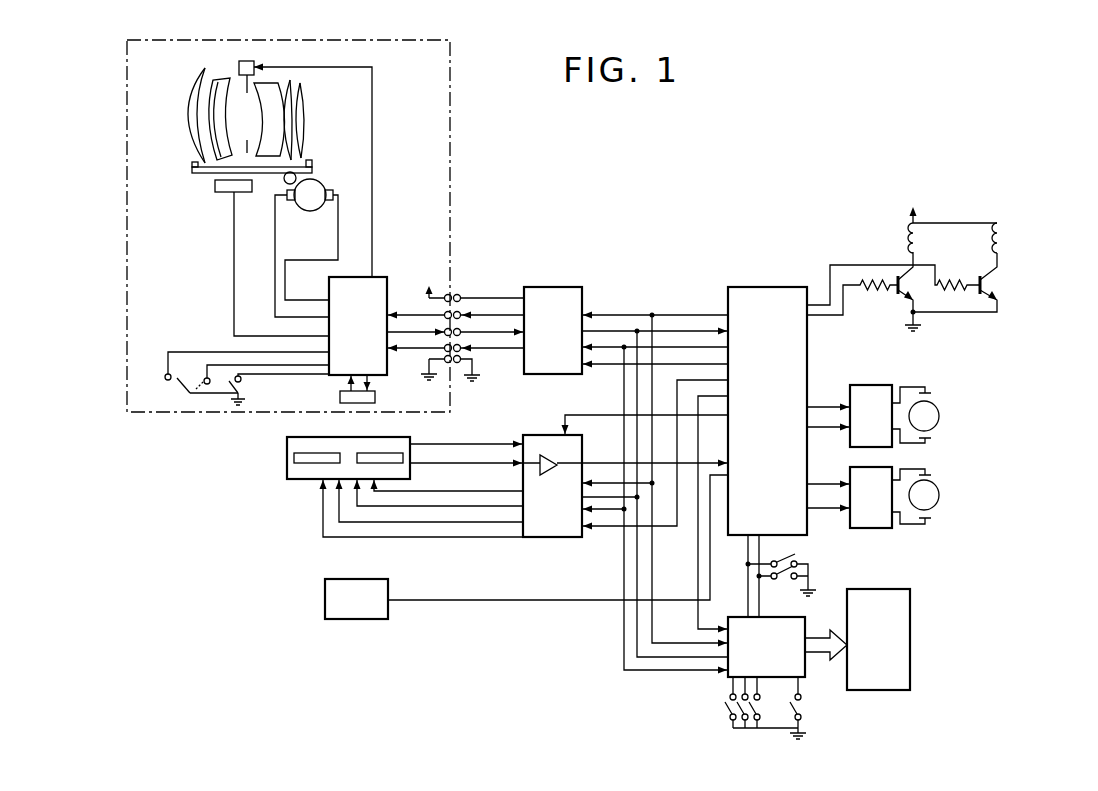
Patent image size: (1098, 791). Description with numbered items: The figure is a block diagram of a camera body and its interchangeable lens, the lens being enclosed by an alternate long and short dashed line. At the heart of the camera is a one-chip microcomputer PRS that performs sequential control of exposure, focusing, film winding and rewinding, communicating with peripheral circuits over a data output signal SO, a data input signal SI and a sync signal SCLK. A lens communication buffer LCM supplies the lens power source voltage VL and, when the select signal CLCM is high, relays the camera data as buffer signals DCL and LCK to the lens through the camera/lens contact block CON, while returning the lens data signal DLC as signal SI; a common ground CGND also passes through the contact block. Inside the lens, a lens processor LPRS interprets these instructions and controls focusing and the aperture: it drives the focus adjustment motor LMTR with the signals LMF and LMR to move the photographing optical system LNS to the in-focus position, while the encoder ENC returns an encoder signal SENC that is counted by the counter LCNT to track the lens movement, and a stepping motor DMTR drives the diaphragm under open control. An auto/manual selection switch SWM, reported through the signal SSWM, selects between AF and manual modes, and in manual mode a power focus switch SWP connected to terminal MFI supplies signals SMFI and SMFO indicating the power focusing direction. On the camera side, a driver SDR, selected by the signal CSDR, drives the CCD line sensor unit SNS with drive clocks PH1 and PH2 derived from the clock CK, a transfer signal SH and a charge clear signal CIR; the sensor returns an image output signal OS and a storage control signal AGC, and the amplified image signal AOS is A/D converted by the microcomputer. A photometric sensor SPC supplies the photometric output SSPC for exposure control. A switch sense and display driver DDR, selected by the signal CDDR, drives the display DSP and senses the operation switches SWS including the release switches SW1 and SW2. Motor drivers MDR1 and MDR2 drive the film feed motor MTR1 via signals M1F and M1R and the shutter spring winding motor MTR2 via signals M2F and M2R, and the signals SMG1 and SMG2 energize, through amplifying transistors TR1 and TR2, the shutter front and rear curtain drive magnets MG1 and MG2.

The stepping motor DMTR is at (247, 61).
The focus adjustment motor LMTR is at (342, 171).
The photographing optical system LNS is at (305, 112).
The encoder ENC is at (221, 201).
The lens processor LPRS is at (378, 285).
The forward drive signal LMF is at (311, 248).
The reverse drive signal LMR is at (302, 256).
The encoder signal SENC is at (281, 264).
The power focus signal SMFI is at (248, 353).
The power focus signal SMFO is at (268, 363).
The selection switch signal SSWM is at (283, 383).
The power focus switch SWP is at (215, 412).
The terminal MFI is at (179, 387).
The auto/manual selection switch SWM is at (176, 423).
The counter LCNT is at (376, 396).
The camera/lens contact block CON is at (456, 290).
The lens power source voltage VL is at (475, 291).
The buffer signal DCL is at (455, 308).
The lens data signal DLC is at (455, 325).
The buffer clock signal LCK is at (455, 341).
The common ground CGND is at (470, 365).
The lens communication buffer LCM is at (557, 297).
The microcomputer PRS is at (757, 297).
The data output signal SO is at (655, 472).
The data input signal SI is at (655, 485).
The sync signal SCLK is at (655, 502).
The lens communication select signal CLCM is at (655, 357).
The sensor driver select signal CSDR is at (655, 446).
The display driver select signal CDDR is at (704, 506).
The clock CK is at (645, 415).
The amplified sensor signal AOS is at (610, 449).
The driver SDR is at (556, 538).
The line sensor unit SNS is at (290, 458).
The storage control signal AGC is at (466, 437).
The output signal OS is at (430, 448).
The drive clock PH1 is at (447, 483).
The drive clock PH2 is at (439, 492).
The transfer signal SH is at (430, 500).
The charge clear signal CIR is at (422, 508).
The photometric sensor SPC is at (350, 620).
The photometric output signal SSPC is at (558, 537).
The release switch SW1 is at (795, 562).
The release switch SW2 is at (785, 580).
The switch sense and display driver DDR is at (728, 675).
The display DSP is at (893, 690).
The operation switches SWS is at (801, 712).
The motor driver MDR1 is at (874, 393).
The forward drive signal M1F is at (828, 401).
The reverse drive signal M1R is at (828, 421).
The film feed motor MTR1 is at (937, 417).
The motor driver MDR2 is at (875, 530).
The forward drive signal M2F is at (828, 478).
The reverse drive signal M2R is at (828, 502).
The shutter spring winding motor MTR2 is at (938, 497).
The magnet drive signal SMG1 is at (893, 277).
The magnet drive signal SMG2 is at (852, 306).
The amplifying transistor TR1 is at (1007, 291).
The amplifying transistor TR2 is at (923, 287).
The shutter front curtain drive magnet MG1 is at (1005, 247).
The shutter rear curtain drive magnet MG2 is at (920, 243).